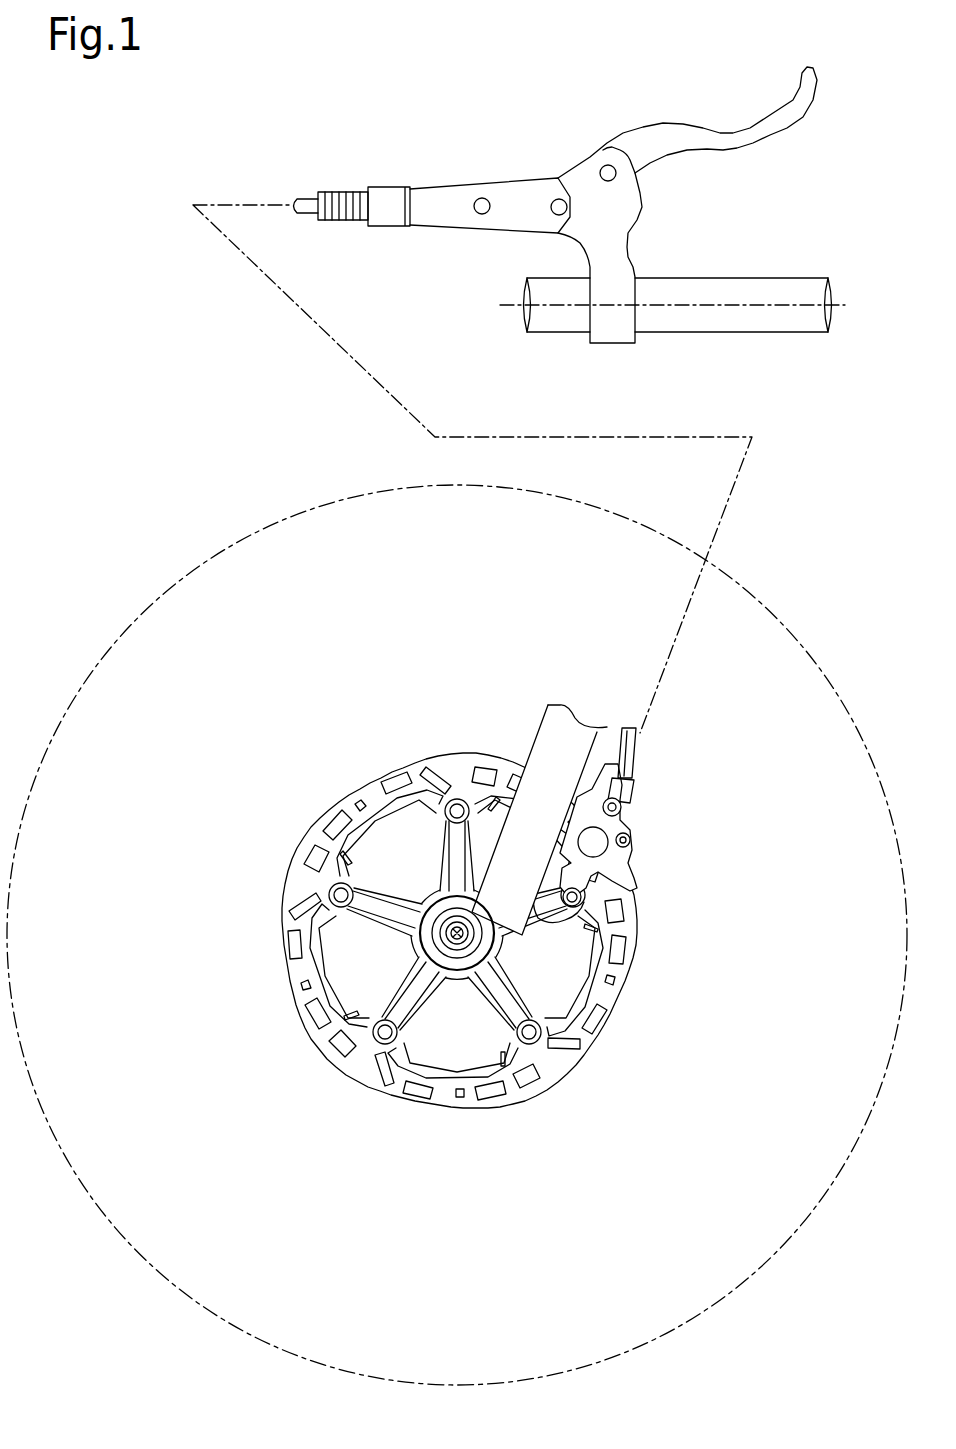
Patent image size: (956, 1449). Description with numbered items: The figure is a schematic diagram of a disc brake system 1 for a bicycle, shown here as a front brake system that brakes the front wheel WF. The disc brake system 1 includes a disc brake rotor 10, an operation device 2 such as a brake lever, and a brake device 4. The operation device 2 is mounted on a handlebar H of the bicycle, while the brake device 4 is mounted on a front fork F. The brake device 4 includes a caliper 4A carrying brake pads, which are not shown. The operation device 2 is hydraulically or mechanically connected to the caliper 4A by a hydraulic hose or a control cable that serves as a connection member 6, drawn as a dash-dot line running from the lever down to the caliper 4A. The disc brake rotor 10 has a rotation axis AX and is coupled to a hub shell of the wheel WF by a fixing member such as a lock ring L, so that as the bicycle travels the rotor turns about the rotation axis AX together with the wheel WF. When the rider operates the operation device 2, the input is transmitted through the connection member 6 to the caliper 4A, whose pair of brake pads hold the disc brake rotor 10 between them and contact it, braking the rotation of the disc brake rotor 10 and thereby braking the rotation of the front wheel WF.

The disc brake system 1 is at (202, 112).
The operation device 2 is at (790, 127).
The handlebar H is at (765, 277).
The connection member 6 is at (743, 463).
The front wheel WF is at (757, 595).
The disc brake rotor 10 is at (330, 737).
The lock ring L is at (430, 908).
The rotation axis AX is at (457, 940).
The front fork F is at (540, 737).
The brake device 4 is at (664, 872).
The caliper 4A is at (632, 810).